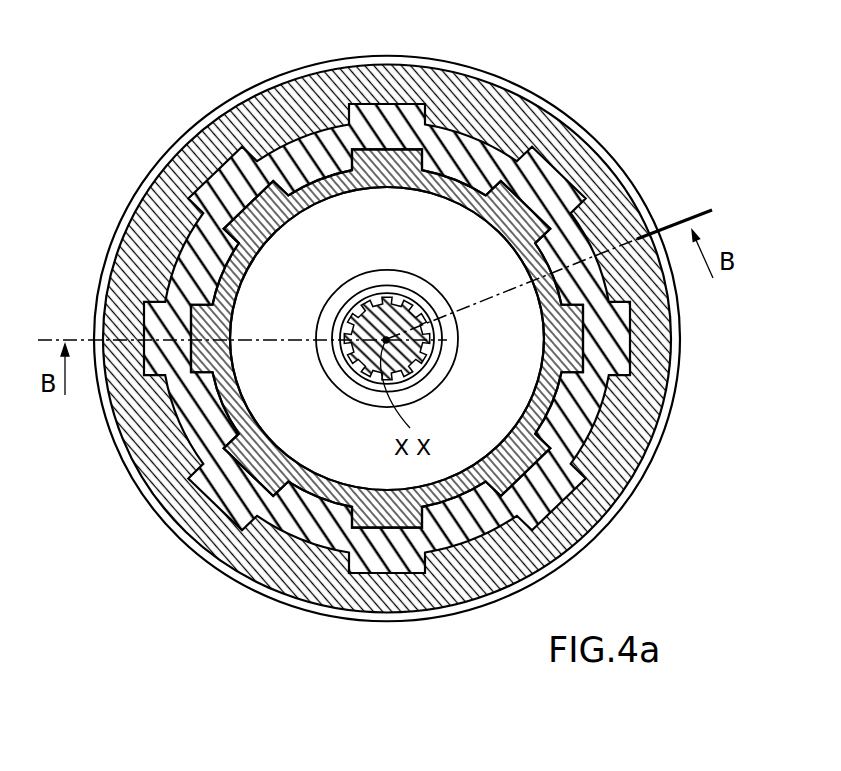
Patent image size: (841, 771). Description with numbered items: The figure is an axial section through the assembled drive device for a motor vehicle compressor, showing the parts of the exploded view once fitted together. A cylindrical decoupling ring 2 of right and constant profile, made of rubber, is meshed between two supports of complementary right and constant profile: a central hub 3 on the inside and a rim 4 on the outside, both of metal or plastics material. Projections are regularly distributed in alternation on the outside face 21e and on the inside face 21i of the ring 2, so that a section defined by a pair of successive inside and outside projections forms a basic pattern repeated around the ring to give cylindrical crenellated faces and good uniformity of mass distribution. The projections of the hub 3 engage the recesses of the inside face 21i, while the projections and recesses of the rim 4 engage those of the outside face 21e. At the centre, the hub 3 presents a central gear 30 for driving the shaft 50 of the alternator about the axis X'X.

The rim 4 is at (268, 120).
The cylindrical decoupling ring 2 is at (455, 150).
The central hub 3 is at (328, 258).
The shaft 50 is at (378, 290).
The central gear 30 is at (446, 367).
The inside face 21i is at (503, 478).
The outside face 21e is at (622, 438).